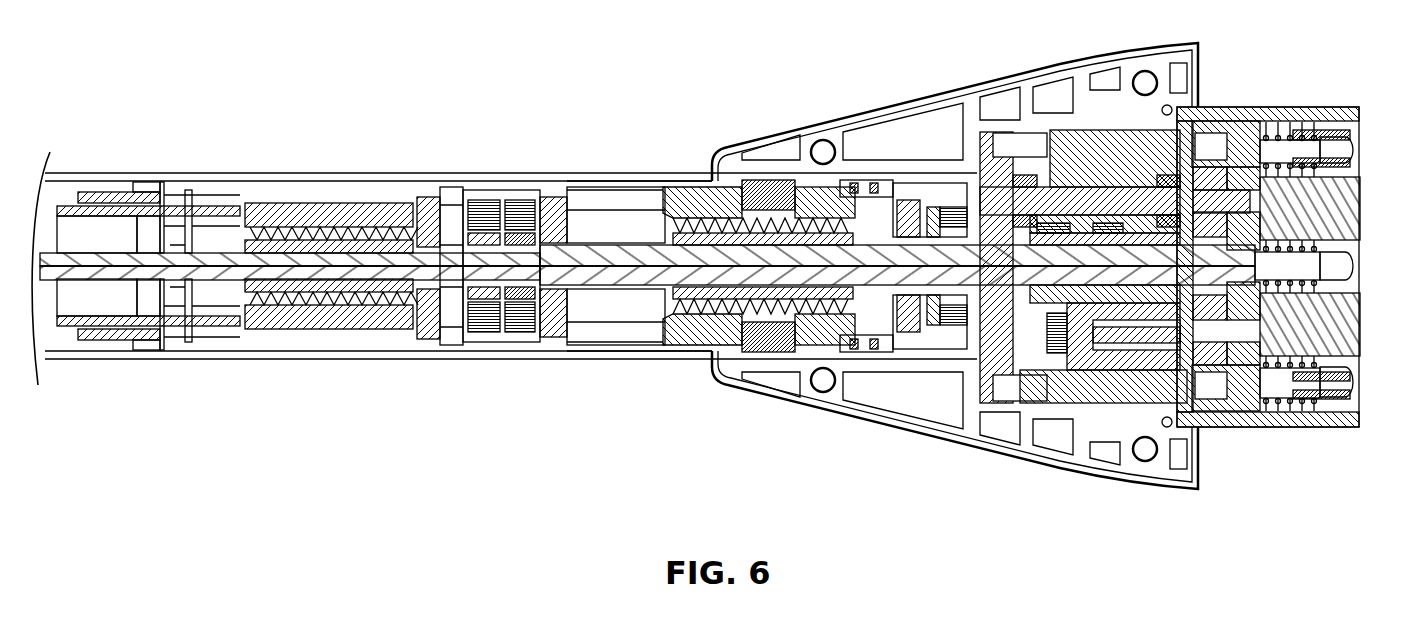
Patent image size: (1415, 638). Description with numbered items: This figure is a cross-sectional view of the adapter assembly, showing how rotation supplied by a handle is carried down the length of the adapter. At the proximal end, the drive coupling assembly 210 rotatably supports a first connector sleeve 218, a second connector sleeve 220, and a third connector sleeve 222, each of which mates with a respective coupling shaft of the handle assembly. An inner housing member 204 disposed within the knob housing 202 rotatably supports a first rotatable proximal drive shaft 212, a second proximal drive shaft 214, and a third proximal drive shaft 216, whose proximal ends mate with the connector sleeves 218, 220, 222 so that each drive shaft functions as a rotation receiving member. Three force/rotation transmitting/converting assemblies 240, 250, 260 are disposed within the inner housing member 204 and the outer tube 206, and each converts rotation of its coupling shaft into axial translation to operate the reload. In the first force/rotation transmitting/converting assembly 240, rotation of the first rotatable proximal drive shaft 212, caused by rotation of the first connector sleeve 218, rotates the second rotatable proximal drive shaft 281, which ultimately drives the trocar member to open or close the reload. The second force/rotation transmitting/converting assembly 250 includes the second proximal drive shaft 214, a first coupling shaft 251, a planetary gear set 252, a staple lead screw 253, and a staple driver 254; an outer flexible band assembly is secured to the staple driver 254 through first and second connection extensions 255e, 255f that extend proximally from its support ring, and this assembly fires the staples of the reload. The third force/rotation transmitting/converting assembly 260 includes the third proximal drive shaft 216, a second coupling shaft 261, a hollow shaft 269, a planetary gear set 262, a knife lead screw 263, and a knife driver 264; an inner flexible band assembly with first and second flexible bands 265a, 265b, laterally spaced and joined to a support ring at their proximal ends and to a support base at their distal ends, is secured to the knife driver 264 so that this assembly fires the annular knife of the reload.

The knob housing 202 is at (957, 87).
The inner housing member 204 is at (1117, 140).
The outer tube 206 is at (625, 173).
The drive coupling assembly 210 is at (1267, 105).
The first rotatable proximal drive shaft 212 is at (1268, 230).
The second proximal drive shaft 214 is at (1242, 147).
The third proximal drive shaft 216 is at (1240, 390).
The first connector sleeve 218 is at (1352, 283).
The second connector sleeve 220 is at (1340, 130).
The third connector sleeve 222 is at (1348, 403).
The first force/rotation transmitting/converting assembly 240 is at (1398, 250).
The second force/rotation transmitting/converting assembly 250 is at (1364, 147).
The first coupling shaft 251 is at (1062, 195).
The planetary gear set 252 is at (905, 180).
The staple lead screw 253 is at (820, 233).
The staple driver 254 is at (727, 197).
The first connection extension 255e is at (655, 182).
The second connection extension 255f is at (627, 350).
The third force/rotation transmitting/converting assembly 260 is at (1364, 380).
The second coupling shaft 261 is at (1143, 343).
The planetary gear set 262 is at (492, 183).
The knife lead screw 263 is at (375, 230).
The knife driver 264 is at (338, 210).
The first flexible band 265a is at (213, 207).
The second flexible band 265b is at (203, 330).
The hollow shaft 269 is at (600, 293).
The second rotatable proximal drive shaft 281 is at (1002, 365).